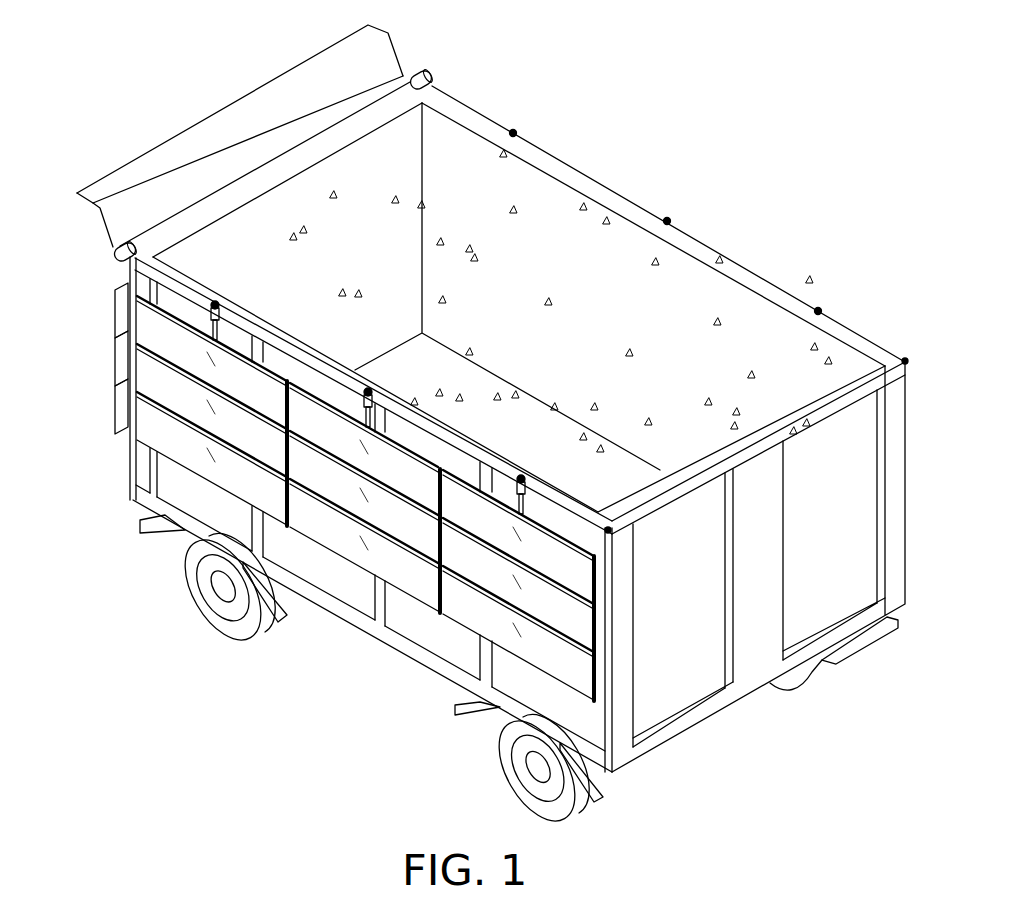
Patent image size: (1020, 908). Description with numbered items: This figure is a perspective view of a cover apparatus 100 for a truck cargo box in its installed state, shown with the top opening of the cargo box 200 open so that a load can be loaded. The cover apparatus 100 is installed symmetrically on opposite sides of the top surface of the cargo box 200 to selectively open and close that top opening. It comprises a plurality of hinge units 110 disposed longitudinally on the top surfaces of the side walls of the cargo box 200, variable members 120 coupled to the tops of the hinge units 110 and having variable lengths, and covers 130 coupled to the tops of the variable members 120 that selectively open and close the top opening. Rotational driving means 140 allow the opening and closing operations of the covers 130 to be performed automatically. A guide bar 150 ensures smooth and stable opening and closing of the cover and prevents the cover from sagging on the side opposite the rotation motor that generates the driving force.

The cover apparatus 100 is at (500, 118).
The hinge units 110 is at (212, 310).
The variable members 120 is at (212, 326).
The covers 130 is at (477, 620).
The rotational driving means 140 is at (112, 253).
The guide bar 150 is at (608, 553).
The truck cargo box 200 is at (673, 675).